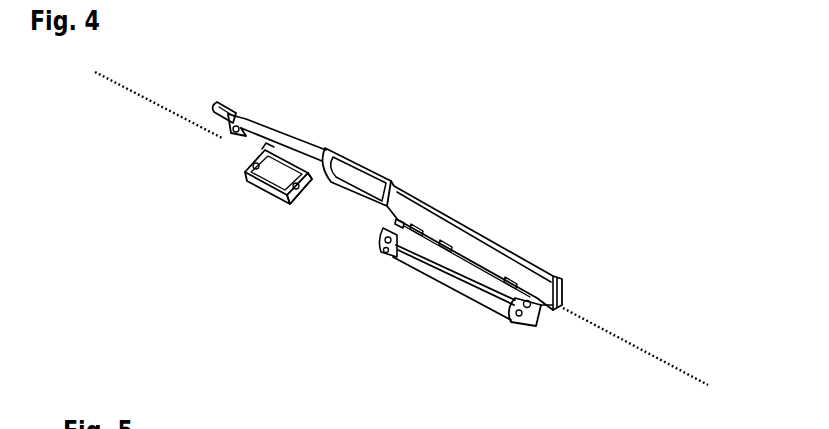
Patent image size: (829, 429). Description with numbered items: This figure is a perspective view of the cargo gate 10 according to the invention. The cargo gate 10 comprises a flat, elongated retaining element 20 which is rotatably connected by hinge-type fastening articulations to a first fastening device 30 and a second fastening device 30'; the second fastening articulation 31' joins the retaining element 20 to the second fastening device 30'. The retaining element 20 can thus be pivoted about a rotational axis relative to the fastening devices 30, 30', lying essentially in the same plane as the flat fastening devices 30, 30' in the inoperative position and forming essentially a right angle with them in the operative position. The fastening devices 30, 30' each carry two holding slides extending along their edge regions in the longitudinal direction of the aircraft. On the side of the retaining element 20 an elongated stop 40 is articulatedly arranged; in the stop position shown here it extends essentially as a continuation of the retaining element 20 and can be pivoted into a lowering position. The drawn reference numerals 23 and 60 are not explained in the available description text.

The cargo gate 10 is at (247, 124).
The retaining element 20 is at (280, 128).
The bearing surface of slide 23 is at (310, 198).
The first fastening device 30 is at (217, 173).
The second fastening device 30' is at (426, 300).
The second fastening articulation 31' is at (546, 356).
The stop 40 is at (215, 117).
The longitudinal axis 60 is at (633, 348).